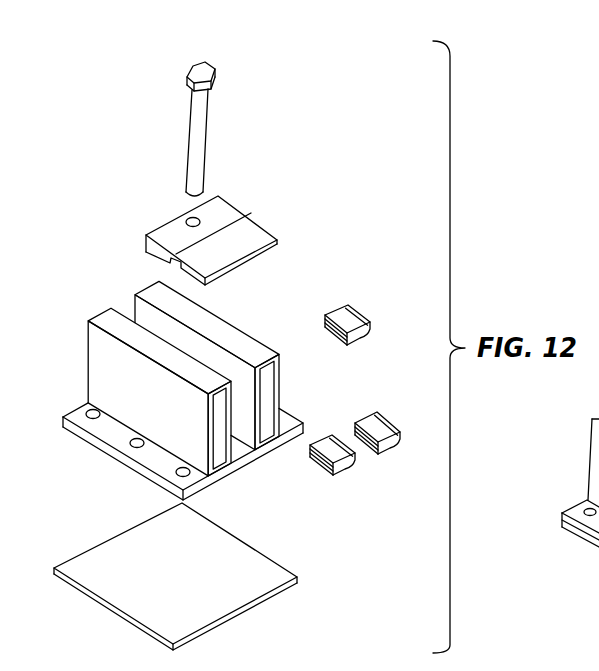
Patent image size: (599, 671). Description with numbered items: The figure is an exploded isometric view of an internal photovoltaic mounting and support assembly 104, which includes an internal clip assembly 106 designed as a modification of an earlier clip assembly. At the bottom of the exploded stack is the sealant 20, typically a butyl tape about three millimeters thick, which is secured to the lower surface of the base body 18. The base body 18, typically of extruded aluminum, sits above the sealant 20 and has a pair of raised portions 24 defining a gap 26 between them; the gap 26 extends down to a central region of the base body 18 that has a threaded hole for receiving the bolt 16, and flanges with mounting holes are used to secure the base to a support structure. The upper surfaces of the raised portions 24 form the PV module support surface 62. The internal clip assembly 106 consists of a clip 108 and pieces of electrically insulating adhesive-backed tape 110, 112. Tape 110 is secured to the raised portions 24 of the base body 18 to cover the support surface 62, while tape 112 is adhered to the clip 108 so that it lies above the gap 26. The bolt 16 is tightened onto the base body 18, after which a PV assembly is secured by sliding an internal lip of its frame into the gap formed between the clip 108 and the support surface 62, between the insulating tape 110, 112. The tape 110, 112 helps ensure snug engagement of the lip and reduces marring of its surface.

The internal photovoltaic mounting and support assembly 104 is at (94, 46).
The internal clip assembly 106 is at (335, 113).
The bolt 16 is at (207, 68).
The base body 18 is at (78, 346).
The sealant 20 is at (272, 557).
The raised portions 24 is at (220, 318).
The gap 26 is at (139, 303).
The PV module support surface 62 is at (248, 345).
The clip 108 is at (247, 255).
The electrically insulating adhesive-backed tape 110 is at (385, 442).
The electrically insulating adhesive-backed tape 112 is at (363, 337).